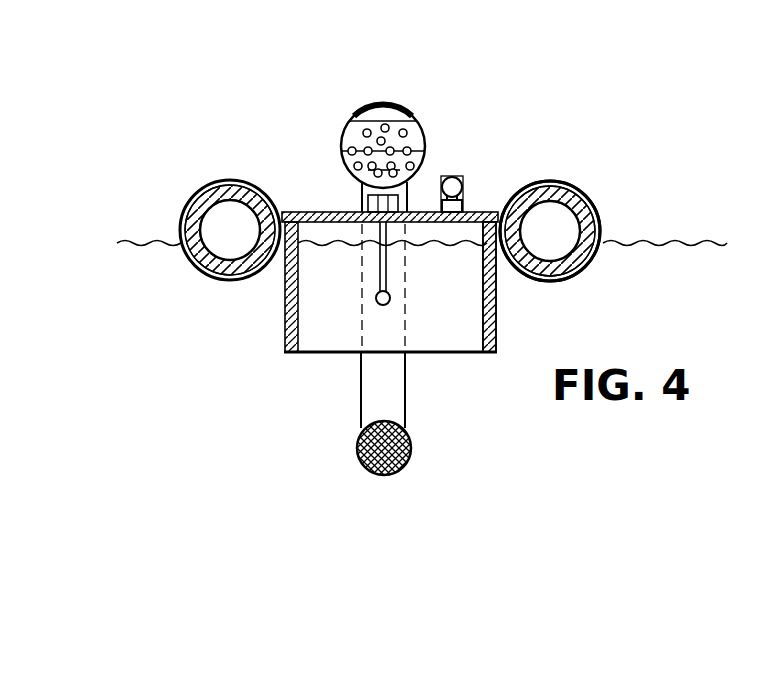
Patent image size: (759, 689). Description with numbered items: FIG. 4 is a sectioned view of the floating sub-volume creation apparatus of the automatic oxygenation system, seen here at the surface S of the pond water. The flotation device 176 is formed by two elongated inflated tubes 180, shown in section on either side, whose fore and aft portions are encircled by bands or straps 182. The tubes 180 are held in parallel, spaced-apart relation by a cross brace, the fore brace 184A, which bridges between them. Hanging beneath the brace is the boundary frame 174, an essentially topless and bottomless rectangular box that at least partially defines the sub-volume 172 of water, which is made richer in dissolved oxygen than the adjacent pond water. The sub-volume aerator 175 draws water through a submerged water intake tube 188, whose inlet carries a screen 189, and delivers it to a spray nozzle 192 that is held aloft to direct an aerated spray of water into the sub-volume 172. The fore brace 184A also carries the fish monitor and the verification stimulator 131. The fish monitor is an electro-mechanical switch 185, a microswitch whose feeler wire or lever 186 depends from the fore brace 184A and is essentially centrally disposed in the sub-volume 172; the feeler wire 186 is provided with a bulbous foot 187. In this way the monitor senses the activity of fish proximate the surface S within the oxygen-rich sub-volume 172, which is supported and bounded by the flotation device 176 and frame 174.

The verification stimulator 131 is at (465, 168).
The sub-volume 172 is at (470, 309).
The boundary frame 174 is at (496, 306).
The sub-volume aerator 175 is at (401, 108).
The flotation device 176 is at (606, 198).
The elongated inflated tubes 180 is at (196, 200).
The bands or straps 182 is at (196, 262).
The fore brace 184A is at (313, 211).
The electro-mechanical switch 185 is at (406, 206).
The feeler wire or lever 186 is at (388, 268).
The bulbous foot 187 is at (375, 303).
The water intake tube 188 is at (383, 411).
The screen 189 is at (412, 452).
The spray nozzle 192 is at (362, 125).
The surface S is at (712, 248).